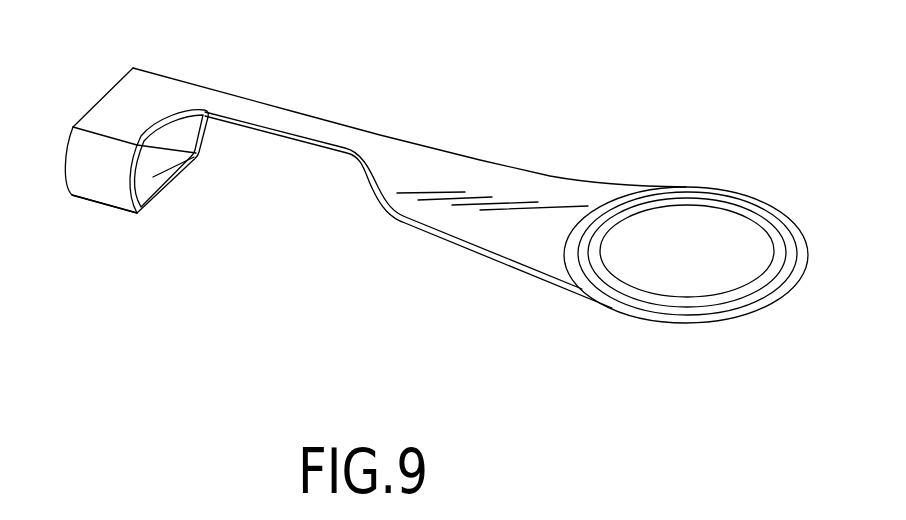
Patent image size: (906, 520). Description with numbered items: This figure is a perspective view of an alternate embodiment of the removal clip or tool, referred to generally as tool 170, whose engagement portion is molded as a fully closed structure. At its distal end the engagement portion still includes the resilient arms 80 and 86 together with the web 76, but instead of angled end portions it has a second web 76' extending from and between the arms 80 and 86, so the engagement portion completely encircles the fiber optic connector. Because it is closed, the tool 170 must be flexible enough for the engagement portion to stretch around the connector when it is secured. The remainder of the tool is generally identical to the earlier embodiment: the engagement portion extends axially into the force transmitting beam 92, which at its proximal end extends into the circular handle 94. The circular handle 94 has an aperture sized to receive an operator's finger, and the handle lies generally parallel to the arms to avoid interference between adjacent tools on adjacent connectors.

The removal tool 170 is at (433, 103).
The arm 80 is at (118, 102).
The web 76 is at (209, 161).
The second web 76' is at (87, 231).
The arm 86 is at (155, 177).
The force transmitting beam 92 is at (294, 117).
The circular handle 94 is at (712, 193).